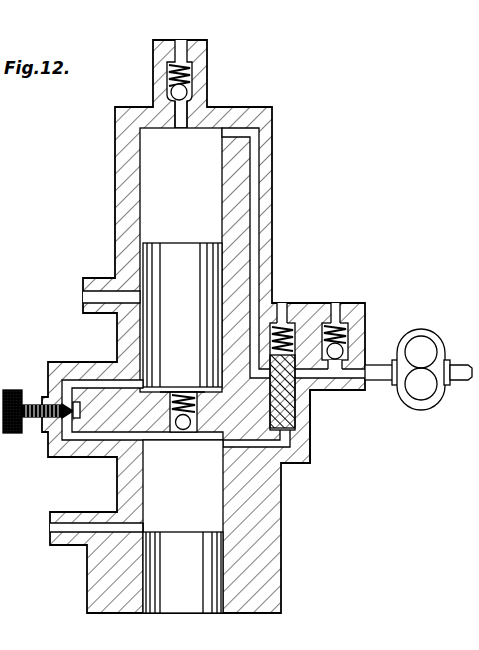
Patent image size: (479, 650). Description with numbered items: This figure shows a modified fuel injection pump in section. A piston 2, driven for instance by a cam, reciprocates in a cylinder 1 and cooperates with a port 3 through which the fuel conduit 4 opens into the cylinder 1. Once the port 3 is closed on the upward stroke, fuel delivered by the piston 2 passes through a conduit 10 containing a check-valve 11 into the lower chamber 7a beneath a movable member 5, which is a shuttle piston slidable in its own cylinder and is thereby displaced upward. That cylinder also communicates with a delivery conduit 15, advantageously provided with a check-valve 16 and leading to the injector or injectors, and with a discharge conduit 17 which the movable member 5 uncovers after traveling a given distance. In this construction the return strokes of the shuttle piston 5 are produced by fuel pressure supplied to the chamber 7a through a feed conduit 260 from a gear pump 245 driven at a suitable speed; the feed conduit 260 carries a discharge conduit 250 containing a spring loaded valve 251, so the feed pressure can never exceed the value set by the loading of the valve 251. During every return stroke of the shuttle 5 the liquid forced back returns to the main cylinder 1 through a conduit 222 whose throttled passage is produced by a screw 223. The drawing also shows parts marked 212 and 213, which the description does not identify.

The cylinder 1 is at (150, 488).
The piston 2 is at (190, 575).
The port 3 is at (143, 525).
The fuel conduit 4 is at (58, 528).
The movable member 5 is at (186, 281).
The lower chamber 7a is at (140, 188).
The conduit 10 is at (197, 417).
The check-valve 11 is at (184, 431).
The delivery conduit 15 is at (183, 127).
The check-valve 16 is at (186, 92).
The discharge conduit 17 is at (88, 300).
The plunger 212 is at (285, 420).
The shoulder 213 is at (277, 443).
The conduit 222 is at (82, 435).
The screw 223 is at (12, 390).
The gear pump 245 is at (423, 410).
The discharge conduit 250 is at (335, 365).
The spring loaded valve 251 is at (341, 347).
The feed conduit 260 is at (253, 223).